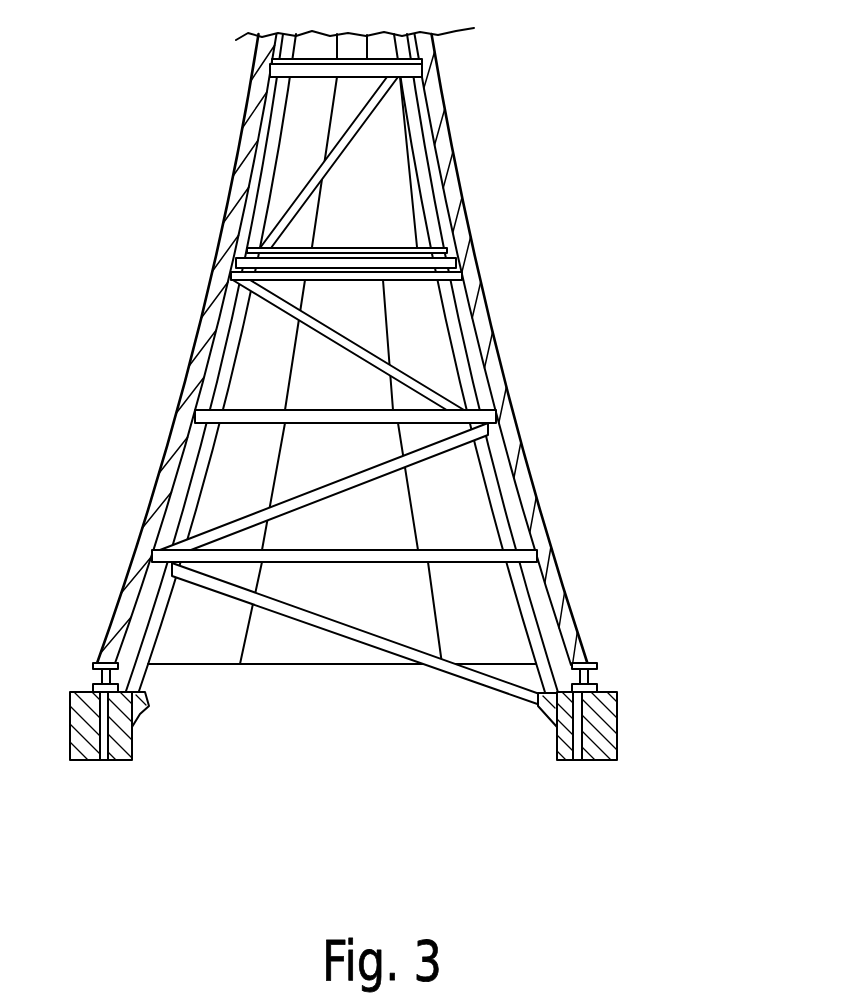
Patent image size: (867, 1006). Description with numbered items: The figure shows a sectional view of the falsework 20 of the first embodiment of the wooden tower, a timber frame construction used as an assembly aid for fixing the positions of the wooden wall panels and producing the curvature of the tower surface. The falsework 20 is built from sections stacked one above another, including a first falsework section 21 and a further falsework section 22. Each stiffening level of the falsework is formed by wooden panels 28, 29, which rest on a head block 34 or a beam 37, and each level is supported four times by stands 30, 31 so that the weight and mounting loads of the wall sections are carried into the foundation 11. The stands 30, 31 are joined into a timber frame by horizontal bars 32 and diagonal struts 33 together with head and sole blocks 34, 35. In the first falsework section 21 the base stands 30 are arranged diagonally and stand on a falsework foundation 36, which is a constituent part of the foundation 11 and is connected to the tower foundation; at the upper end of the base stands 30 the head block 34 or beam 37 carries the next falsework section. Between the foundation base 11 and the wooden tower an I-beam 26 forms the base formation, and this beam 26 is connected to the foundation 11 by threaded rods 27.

The foundation base 11 is at (608, 730).
The falsework 20 is at (350, 717).
The first falsework section 21 is at (355, 537).
The falsework section 22 is at (323, 226).
The I-beam 26 is at (595, 673).
The threaded rods 27 is at (583, 758).
The wooden panel 28 is at (453, 260).
The wooden panel 29 is at (401, 263).
The base stands 30 is at (532, 640).
The stands 31 is at (418, 177).
The bars 32 is at (400, 418).
The struts 33 is at (380, 110).
The head block 34 is at (432, 90).
The sole block 35 is at (397, 250).
The falsework foundation 36 is at (543, 712).
The beam 37 is at (400, 274).